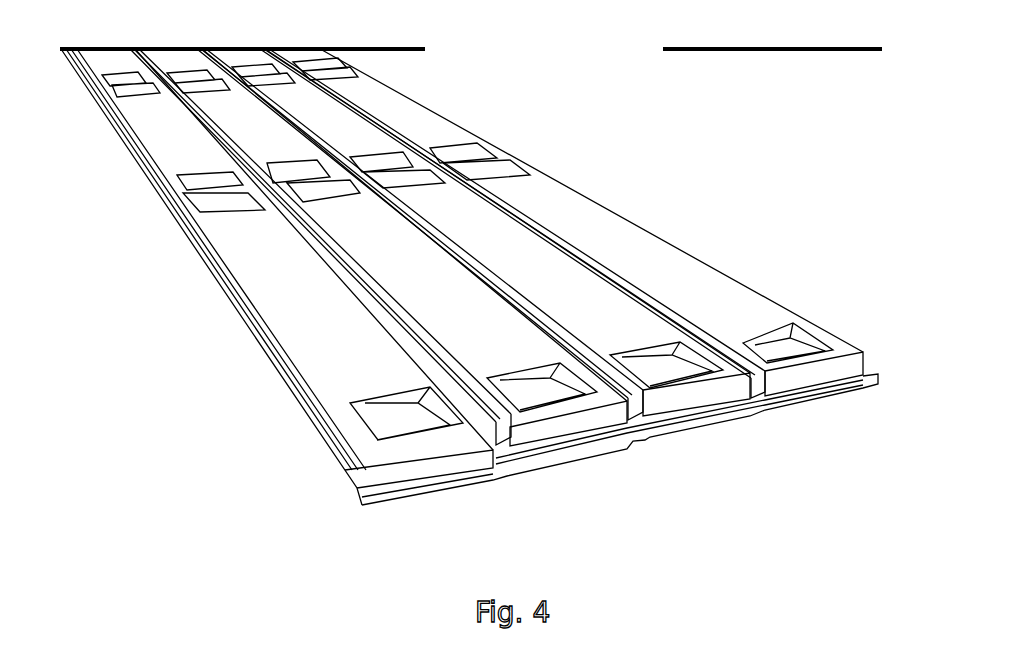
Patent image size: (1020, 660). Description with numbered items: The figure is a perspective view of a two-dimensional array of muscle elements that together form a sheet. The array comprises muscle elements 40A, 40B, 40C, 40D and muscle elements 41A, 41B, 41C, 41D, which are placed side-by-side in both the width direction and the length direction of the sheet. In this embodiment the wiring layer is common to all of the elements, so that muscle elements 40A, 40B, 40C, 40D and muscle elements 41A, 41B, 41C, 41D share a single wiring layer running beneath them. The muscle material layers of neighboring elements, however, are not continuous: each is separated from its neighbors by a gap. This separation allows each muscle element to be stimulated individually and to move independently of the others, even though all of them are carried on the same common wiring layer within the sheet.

The muscle element 40A is at (402, 472).
The muscle element 40B is at (565, 437).
The muscle element 40C is at (677, 410).
The muscle element 40D is at (793, 383).
The muscle element 41A is at (130, 148).
The muscle element 41B is at (277, 140).
The muscle element 41C is at (337, 128).
The muscle element 41D is at (428, 130).